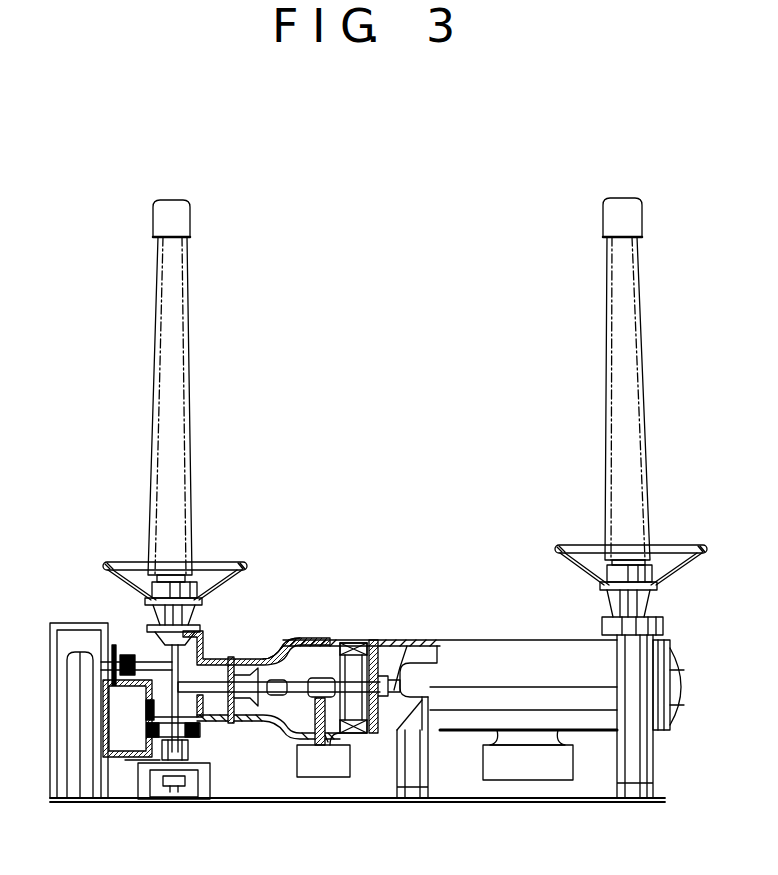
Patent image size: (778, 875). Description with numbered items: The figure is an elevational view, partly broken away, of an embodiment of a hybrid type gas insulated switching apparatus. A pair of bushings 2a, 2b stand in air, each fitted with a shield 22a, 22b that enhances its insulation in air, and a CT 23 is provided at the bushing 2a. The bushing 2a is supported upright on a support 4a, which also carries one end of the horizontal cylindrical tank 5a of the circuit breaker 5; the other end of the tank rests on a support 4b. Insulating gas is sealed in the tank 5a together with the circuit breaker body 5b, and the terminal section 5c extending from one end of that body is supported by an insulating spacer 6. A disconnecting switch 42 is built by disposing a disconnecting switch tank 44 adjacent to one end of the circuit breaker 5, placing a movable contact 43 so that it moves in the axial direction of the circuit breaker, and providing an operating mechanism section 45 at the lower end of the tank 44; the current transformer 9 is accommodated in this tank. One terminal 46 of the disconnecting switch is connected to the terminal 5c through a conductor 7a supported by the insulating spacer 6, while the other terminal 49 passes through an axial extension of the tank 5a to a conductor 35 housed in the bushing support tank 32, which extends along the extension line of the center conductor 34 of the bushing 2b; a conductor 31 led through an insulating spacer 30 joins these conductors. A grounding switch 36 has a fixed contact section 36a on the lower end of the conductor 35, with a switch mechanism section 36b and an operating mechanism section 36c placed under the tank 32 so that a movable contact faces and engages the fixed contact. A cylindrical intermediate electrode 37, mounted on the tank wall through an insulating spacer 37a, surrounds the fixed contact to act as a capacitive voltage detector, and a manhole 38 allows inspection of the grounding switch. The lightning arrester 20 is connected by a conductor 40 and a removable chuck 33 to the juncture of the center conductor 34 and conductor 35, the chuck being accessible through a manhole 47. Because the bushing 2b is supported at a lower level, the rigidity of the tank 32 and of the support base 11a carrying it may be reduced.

The bushing 2a is at (640, 436).
The bushing 2b is at (190, 434).
The shield 22a is at (708, 536).
The shield 22b is at (258, 550).
The CT 23 is at (664, 627).
The support 4a is at (649, 771).
The support 4b is at (428, 769).
The circuit breaker 5 is at (512, 676).
The cylindrical tank 5a is at (534, 646).
The circuit breaker body 5b is at (430, 663).
The terminal section 5c is at (405, 652).
The insulating spacer 6 is at (373, 641).
The conductor 7a is at (346, 644).
The current transformer 9 is at (349, 734).
The support base 11a is at (134, 796).
The lightning arrester 20 is at (76, 711).
The insulating spacer 30 is at (245, 693).
The conductor 31 is at (227, 681).
The bushing support tank 32 is at (206, 642).
The chuck 33 is at (154, 613).
The center conductor 34 is at (196, 628).
The conductor 35 is at (162, 699).
The grounding switch 36 is at (194, 754).
The fixed contact section 36a is at (196, 729).
The switch mechanism section 36b is at (165, 800).
The operating mechanism section 36c is at (191, 800).
The cylindrical intermediate electrode 37 is at (200, 745).
The insulating spacer 37a is at (162, 748).
The manhole 38 is at (150, 726).
The conductor 40 is at (101, 650).
The disconnecting switch 42 is at (288, 734).
The movable contact 43 is at (295, 676).
The disconnecting switch tank 44 is at (284, 655).
The operating mechanism section 45 is at (350, 764).
The terminal 46 is at (330, 676).
The manhole 47 is at (148, 654).
The terminal 49 is at (240, 670).